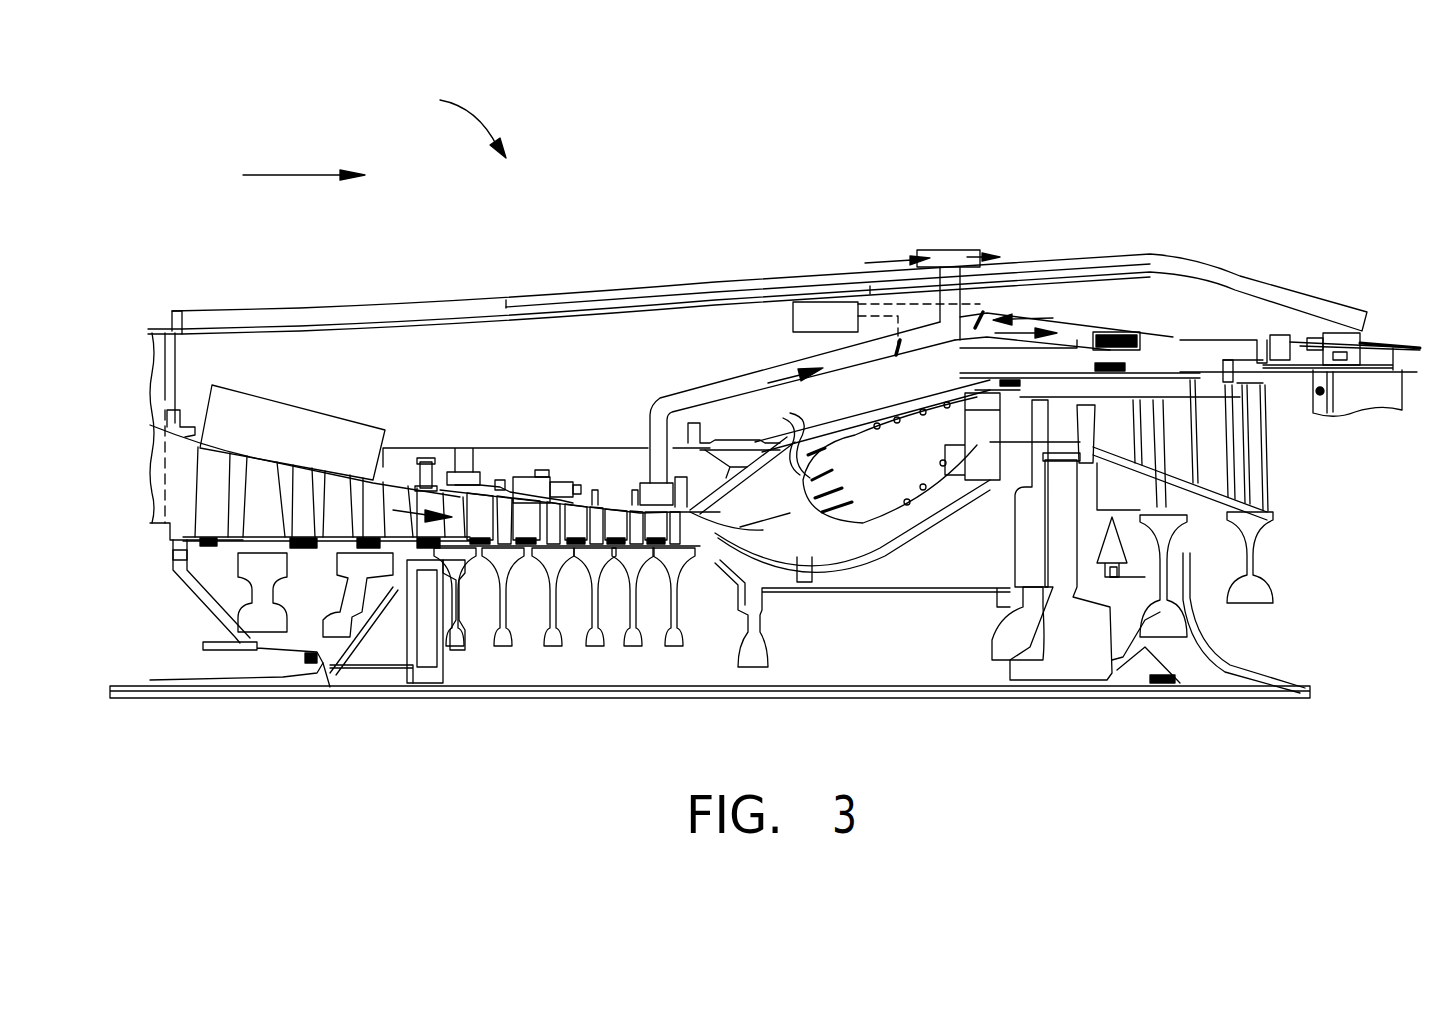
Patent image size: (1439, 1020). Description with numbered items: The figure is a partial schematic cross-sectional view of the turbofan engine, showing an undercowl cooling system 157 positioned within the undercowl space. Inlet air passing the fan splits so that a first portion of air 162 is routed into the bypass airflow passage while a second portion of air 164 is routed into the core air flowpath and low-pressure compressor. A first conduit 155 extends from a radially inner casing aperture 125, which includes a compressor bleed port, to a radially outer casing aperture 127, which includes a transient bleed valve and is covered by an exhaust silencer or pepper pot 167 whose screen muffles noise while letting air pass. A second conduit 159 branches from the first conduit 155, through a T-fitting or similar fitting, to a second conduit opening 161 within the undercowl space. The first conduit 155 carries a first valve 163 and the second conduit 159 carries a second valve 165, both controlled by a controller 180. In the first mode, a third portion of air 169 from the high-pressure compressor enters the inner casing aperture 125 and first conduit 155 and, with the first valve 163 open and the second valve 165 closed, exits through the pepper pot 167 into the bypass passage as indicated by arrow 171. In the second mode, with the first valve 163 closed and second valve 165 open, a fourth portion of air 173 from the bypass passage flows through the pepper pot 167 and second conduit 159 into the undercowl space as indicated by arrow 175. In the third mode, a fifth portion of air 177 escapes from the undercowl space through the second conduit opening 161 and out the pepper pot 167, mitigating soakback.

The radially inner casing aperture 125 is at (647, 450).
The radially outer casing aperture 127 is at (950, 270).
The first conduit 155 is at (710, 390).
The undercowl cooling system 157 is at (449, 119).
The second conduit 159 is at (993, 397).
The second conduit opening 161 is at (994, 405).
The first portion of air 162 is at (292, 175).
The first valve 163 is at (895, 357).
The second portion of air 164 is at (403, 510).
The second valve 165 is at (980, 315).
The pepper pot 167 is at (950, 275).
The third portion of air 169 is at (783, 377).
The arrow indicating air into bypass airflow passage 171 is at (975, 250).
The fourth portion of air 173 is at (888, 263).
The arrow indicating air into undercowl spaces 175 is at (1027, 353).
The fifth portion of air 177 is at (1020, 350).
The controller 180 is at (849, 331).